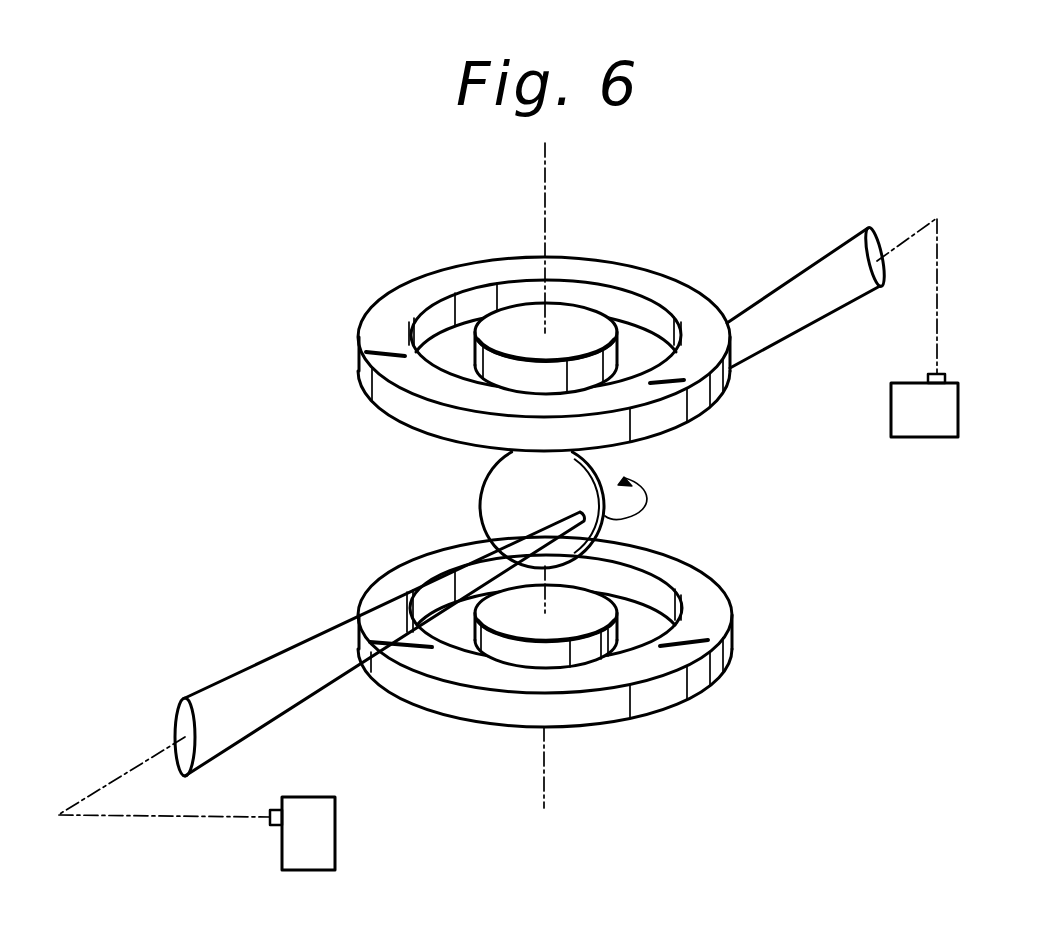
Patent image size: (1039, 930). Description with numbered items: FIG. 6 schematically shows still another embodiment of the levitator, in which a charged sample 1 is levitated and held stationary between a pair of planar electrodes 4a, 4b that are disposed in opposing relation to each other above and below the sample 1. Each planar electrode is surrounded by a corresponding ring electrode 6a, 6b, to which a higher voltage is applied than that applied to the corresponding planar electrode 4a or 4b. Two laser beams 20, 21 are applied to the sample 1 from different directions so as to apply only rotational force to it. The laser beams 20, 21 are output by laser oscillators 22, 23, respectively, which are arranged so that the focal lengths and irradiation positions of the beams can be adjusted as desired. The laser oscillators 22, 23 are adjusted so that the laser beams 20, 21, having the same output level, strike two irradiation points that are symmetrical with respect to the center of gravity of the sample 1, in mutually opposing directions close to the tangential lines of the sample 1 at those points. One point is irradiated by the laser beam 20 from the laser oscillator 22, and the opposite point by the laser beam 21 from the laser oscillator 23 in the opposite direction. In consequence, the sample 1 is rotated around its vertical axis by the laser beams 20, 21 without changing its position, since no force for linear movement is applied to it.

The charged sample 1 is at (492, 493).
The planar electrode 4a is at (597, 604).
The planar electrode 4b is at (575, 311).
The ring electrode 6a is at (722, 613).
The ring electrode 6b is at (690, 298).
The laser beam 20 is at (317, 677).
The laser beam 21 is at (827, 265).
The laser oscillator 22 is at (335, 837).
The laser oscillator 23 is at (948, 415).